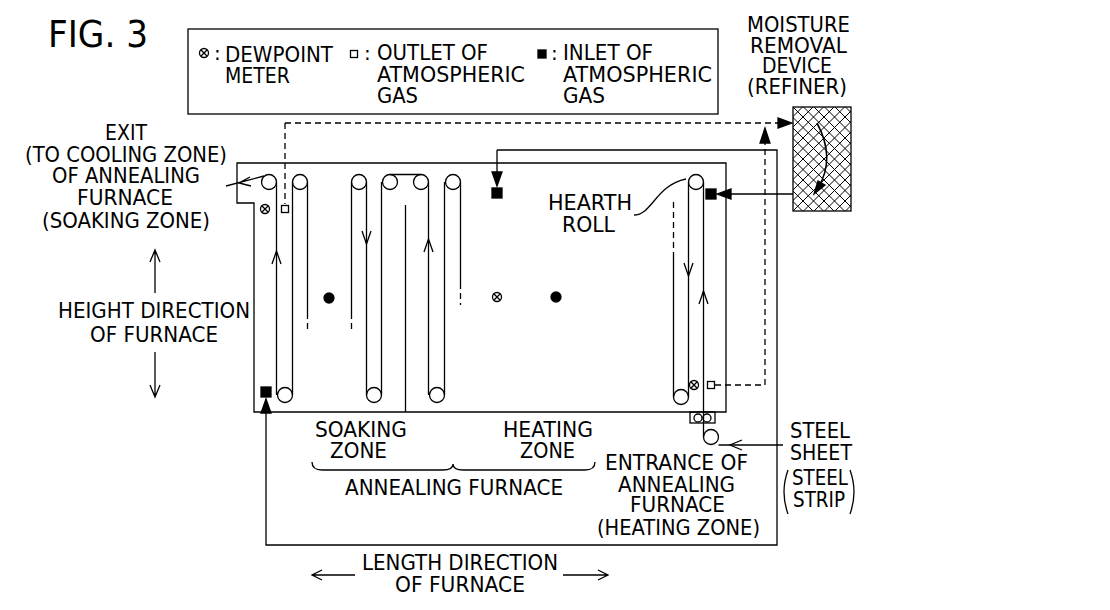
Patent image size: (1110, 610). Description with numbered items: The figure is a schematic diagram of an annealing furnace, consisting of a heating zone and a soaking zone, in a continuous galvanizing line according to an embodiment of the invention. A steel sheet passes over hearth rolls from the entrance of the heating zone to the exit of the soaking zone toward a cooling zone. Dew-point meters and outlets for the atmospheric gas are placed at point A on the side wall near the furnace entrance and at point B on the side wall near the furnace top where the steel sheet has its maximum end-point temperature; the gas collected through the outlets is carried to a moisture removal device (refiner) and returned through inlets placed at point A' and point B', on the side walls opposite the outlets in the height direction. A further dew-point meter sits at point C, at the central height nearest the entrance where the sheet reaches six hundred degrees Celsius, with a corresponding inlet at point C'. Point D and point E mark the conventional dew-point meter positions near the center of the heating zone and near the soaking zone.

The point A is at (723, 402).
The point B is at (257, 220).
The point C is at (497, 316).
The point D is at (556, 277).
The point E is at (329, 279).
The point A' is at (731, 179).
The point B' is at (247, 397).
The point C' is at (482, 164).